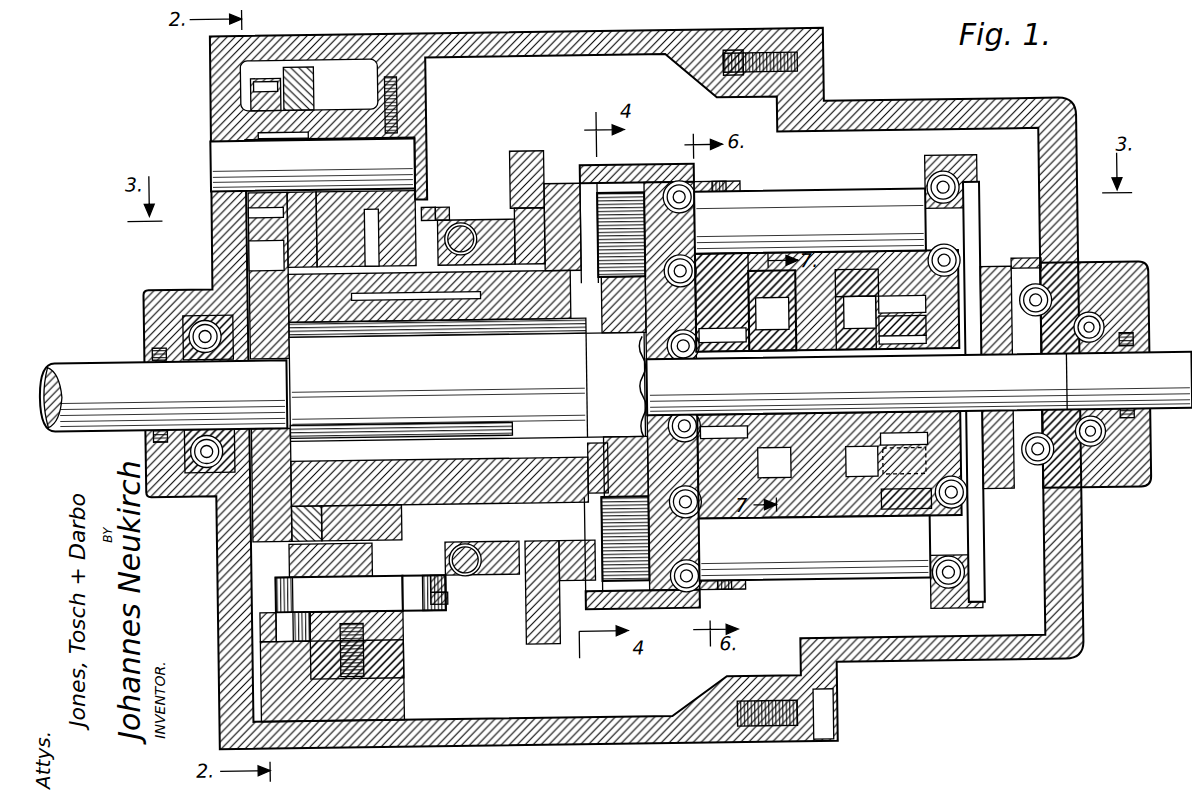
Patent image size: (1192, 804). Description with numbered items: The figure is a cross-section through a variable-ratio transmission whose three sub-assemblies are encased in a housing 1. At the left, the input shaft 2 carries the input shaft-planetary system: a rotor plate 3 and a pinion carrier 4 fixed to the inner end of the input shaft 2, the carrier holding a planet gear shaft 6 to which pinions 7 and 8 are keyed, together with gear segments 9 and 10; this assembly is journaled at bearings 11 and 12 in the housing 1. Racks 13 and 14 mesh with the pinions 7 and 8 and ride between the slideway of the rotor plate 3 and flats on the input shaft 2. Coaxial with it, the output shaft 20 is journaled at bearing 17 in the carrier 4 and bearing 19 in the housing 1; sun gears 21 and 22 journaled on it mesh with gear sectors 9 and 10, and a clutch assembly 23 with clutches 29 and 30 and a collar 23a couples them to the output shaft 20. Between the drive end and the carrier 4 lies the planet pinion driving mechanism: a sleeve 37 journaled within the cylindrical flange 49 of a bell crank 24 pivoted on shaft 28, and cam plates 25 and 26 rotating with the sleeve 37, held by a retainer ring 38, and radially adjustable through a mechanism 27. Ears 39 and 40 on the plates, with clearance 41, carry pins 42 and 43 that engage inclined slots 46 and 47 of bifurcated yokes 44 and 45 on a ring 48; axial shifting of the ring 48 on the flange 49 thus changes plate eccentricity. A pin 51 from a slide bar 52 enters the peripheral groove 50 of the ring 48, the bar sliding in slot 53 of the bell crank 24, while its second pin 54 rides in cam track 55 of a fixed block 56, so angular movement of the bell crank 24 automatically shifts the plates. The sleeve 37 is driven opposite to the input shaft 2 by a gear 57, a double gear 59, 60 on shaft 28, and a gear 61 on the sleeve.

The housing 1 is at (1078, 582).
The input shaft 2 is at (80, 362).
The rotor plate 3 is at (637, 183).
The pinion carrier 4 is at (700, 174).
The planet gear shaft 6 is at (885, 222).
The pinion 7 is at (615, 193).
The pinion 8 is at (608, 575).
The gear segment 9 is at (752, 262).
The gear segment 10 is at (870, 525).
The bearing 11 is at (172, 343).
The bearing 12 is at (1086, 274).
The rack 13 is at (614, 333).
The rack 14 is at (630, 420).
The bearing 17 is at (690, 440).
The bearing 19 is at (1112, 424).
The output shaft 20 is at (1166, 360).
The sun gear 21 is at (730, 346).
The sun gear 22 is at (892, 345).
The clutch assembly 23 is at (889, 313).
The collar 23a is at (866, 290).
The bell crank 24 is at (330, 320).
The cam plate 25 is at (525, 150).
The cam plate 26 is at (560, 183).
The mechanism 27 is at (523, 620).
The pivot shaft 28 is at (214, 152).
The clutch 29 is at (805, 300).
The clutch 30 is at (852, 300).
The sleeve 37 is at (532, 466).
The retainer ring 38 is at (585, 463).
The ear 39 is at (520, 207).
The ear 40 is at (488, 573).
The clearance 41 is at (508, 218).
The pin 42 is at (463, 222).
The pin 43 is at (466, 571).
The bifurcated yoke 44 is at (430, 205).
The bifurcated yoke 45 is at (437, 590).
The inclined slot 46 is at (446, 205).
The inclined slot 47 is at (440, 602).
The ring 48 is at (305, 190).
The cylindrical flange 49 is at (412, 333).
The peripheral groove 50 is at (345, 190).
The pin 51 is at (409, 593).
The slide bar 52 is at (275, 590).
The slot 53 is at (292, 562).
The pin 54 is at (280, 622).
The cam track 55 is at (283, 642).
The block 56 is at (305, 717).
The gear 57 is at (251, 283).
The double gear 59 is at (255, 94).
The double gear 60 is at (320, 92).
The gear 61 is at (302, 480).